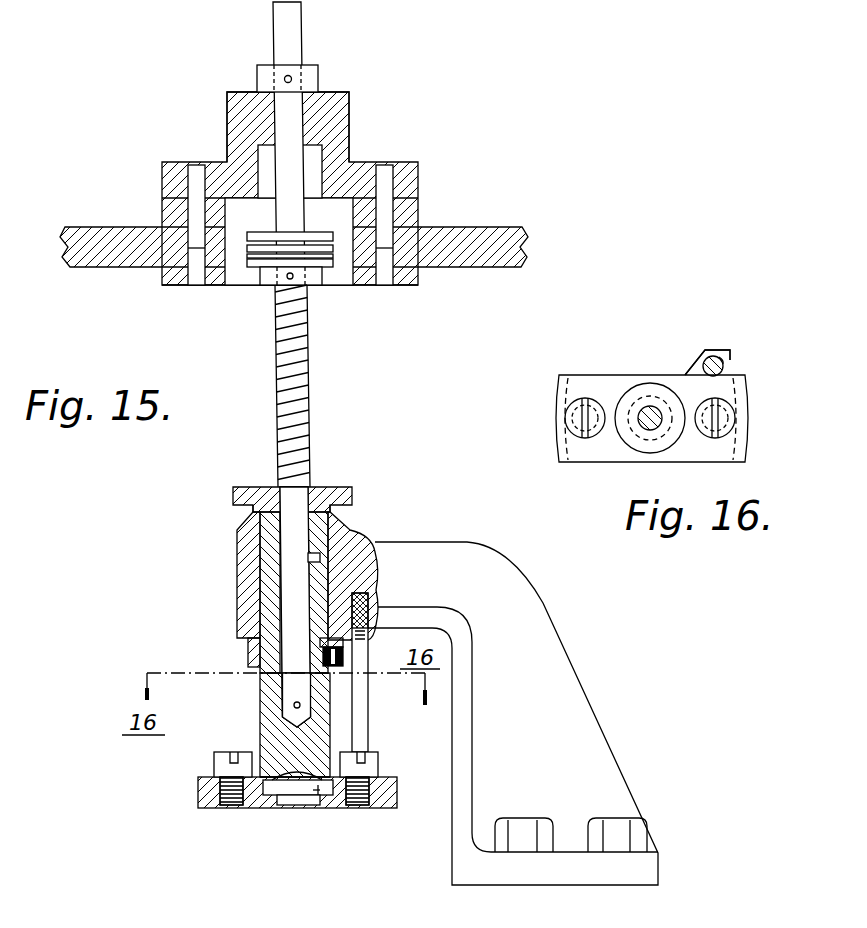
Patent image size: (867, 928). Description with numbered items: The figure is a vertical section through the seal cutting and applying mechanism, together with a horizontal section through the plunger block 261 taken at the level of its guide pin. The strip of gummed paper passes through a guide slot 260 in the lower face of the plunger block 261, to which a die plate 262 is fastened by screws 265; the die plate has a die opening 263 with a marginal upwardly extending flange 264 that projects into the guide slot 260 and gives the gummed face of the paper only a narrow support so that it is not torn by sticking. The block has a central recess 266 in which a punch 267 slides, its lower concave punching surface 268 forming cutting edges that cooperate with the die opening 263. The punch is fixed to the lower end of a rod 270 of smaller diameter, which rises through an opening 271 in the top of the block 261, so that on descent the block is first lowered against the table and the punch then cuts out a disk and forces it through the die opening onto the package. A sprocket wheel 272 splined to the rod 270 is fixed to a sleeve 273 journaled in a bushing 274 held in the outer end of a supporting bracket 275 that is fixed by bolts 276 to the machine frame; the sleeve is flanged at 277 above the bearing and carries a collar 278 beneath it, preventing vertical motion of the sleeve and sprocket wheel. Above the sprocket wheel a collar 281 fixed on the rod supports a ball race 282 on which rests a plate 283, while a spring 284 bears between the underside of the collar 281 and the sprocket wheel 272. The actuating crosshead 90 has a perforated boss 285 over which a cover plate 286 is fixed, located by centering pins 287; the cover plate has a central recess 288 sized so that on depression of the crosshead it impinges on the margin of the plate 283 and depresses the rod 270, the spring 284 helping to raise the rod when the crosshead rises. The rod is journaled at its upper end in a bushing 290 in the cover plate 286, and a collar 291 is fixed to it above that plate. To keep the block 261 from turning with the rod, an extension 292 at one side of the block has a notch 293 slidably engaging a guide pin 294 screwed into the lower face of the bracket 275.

In FIG. 15, the actuating crosshead 90 is at (467, 230).
In FIG. 15, the plunger block 261 is at (198, 778).
In FIG. 16, the plunger block 261 is at (588, 380).
In FIG. 15, the guide slot 260 is at (272, 780).
In FIG. 15, the die plate 262 is at (318, 788).
In FIG. 15, the die opening 263 is at (300, 800).
In FIG. 15, the flange 264 is at (312, 790).
In FIG. 15, the screws 265 is at (228, 752).
In FIG. 16, the screws 265 is at (728, 415).
In FIG. 15, the central recess 266 is at (260, 707).
In FIG. 15, the punch 267 is at (305, 733).
In FIG. 15, the punching surface 268 is at (298, 770).
In FIG. 15, the rod 270 is at (294, 364).
In FIG. 16, the rod 270 is at (650, 408).
In FIG. 15, the opening 271 is at (290, 680).
In FIG. 15, the sprocket wheel 272 is at (322, 490).
In FIG. 15, the sleeve 273 is at (252, 513).
In FIG. 15, the bushing 274 is at (327, 550).
In FIG. 15, the supporting bracket 275 is at (423, 552).
In FIG. 15, the bolts 276 is at (600, 826).
In FIG. 15, the flange 277 is at (252, 516).
In FIG. 15, the collar 278 is at (247, 653).
In FIG. 15, the collar 281 is at (310, 277).
In FIG. 15, the ball race 282 is at (247, 248).
In FIG. 15, the plate 283 is at (260, 226).
In FIG. 15, the spring 284 is at (308, 370).
In FIG. 15, the perforated boss 285 is at (407, 217).
In FIG. 15, the cover plate 286 is at (352, 165).
In FIG. 15, the centering pins 287 is at (383, 180).
In FIG. 15, the central recess 288 is at (313, 180).
In FIG. 15, the bushing 290 is at (327, 90).
In FIG. 15, the collar 291 is at (311, 75).
In FIG. 16, the extension 292 is at (704, 352).
In FIG. 16, the notch 293 is at (725, 368).
In FIG. 15, the guide pin 294 is at (368, 745).
In FIG. 16, the guide pin 294 is at (722, 358).